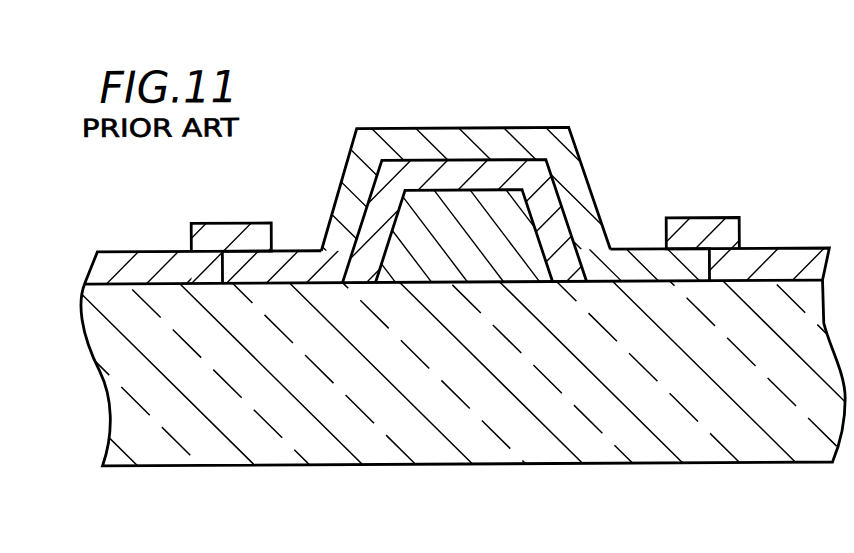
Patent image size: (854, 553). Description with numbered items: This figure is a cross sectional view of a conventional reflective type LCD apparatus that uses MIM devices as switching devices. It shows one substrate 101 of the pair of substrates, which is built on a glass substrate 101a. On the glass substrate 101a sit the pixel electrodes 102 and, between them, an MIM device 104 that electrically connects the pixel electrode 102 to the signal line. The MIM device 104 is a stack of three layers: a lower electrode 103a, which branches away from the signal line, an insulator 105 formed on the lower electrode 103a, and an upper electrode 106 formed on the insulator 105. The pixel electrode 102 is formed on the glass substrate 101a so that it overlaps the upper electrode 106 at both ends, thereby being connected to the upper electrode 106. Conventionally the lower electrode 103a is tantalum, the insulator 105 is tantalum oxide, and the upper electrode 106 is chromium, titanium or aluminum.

The substrate 101 is at (70, 112).
The glass substrate 101a is at (428, 445).
The pixel electrode 102 is at (220, 233).
The lower electrode 103a is at (413, 235).
The MIM device 104 is at (473, 92).
The insulator 105 is at (403, 168).
The upper electrode 106 is at (534, 140).